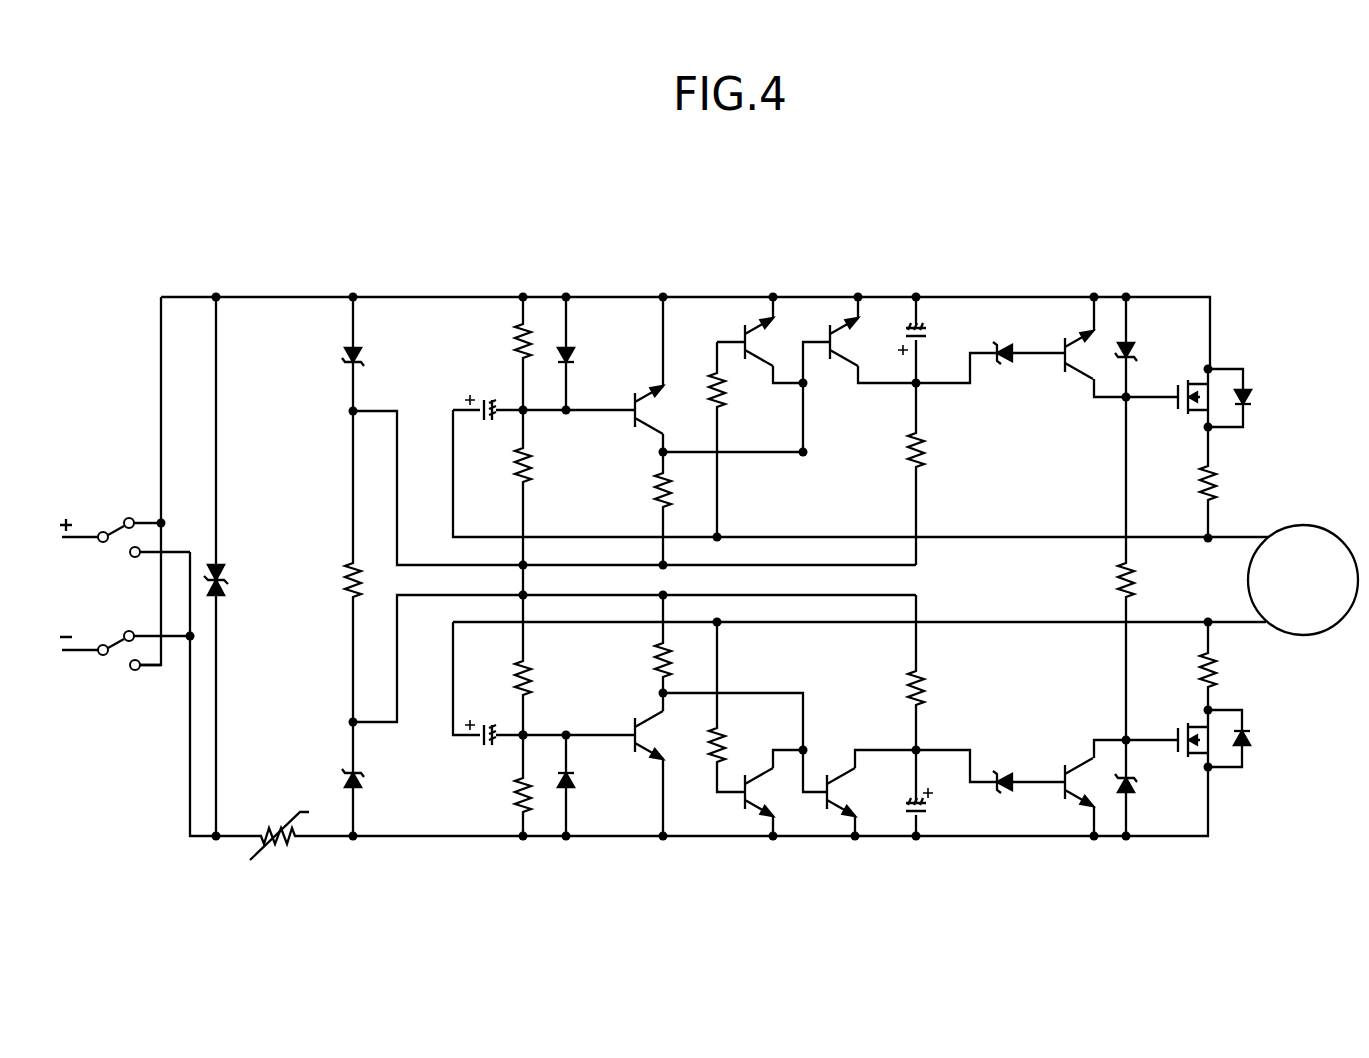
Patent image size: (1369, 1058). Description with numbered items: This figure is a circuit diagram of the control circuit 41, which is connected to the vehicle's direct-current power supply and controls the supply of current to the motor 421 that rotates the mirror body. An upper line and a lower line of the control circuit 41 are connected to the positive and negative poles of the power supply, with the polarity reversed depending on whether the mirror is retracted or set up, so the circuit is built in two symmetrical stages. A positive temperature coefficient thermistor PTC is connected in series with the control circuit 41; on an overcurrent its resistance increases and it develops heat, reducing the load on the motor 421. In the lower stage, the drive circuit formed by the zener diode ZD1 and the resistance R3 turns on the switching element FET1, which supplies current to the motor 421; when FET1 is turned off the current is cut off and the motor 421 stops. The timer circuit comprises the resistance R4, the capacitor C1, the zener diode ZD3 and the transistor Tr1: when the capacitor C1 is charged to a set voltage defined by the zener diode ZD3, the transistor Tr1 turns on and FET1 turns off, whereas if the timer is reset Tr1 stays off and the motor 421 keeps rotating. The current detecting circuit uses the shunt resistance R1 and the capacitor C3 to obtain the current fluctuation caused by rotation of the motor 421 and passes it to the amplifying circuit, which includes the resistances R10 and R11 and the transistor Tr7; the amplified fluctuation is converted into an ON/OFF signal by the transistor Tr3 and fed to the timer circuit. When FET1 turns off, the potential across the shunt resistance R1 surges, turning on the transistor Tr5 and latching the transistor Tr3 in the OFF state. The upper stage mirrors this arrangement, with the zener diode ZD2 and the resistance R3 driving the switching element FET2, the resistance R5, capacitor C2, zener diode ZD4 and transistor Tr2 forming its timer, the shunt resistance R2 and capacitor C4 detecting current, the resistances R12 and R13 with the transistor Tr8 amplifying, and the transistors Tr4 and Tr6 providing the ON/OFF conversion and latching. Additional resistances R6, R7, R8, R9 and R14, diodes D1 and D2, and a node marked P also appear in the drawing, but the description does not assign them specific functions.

The control circuit 41 is at (453, 246).
The motor 421 is at (1330, 531).
The shunt resistance R1 is at (1227, 670).
The shunt resistance R2 is at (1229, 483).
The resistance R3 is at (1145, 580).
The resistance R4 is at (934, 688).
The resistance R5 is at (934, 450).
The resistor R6 is at (699, 745).
The resistor R7 is at (699, 390).
The resistor R8 is at (645, 660).
The resistor R9 is at (645, 490).
The resistance R10 is at (497, 795).
The resistance R11 is at (497, 678).
The resistance R12 is at (497, 341).
The resistance R13 is at (497, 465).
The resistor R14 is at (324, 580).
The transistor Tr1 is at (1082, 757).
The transistor Tr2 is at (1083, 378).
The transistor Tr3 is at (840, 771).
The transistor Tr4 is at (840, 368).
The transistor Tr5 is at (757, 770).
The transistor Tr6 is at (758, 365).
The transistor Tr7 is at (642, 749).
The transistor Tr8 is at (643, 383).
The zener diode ZD1 is at (1150, 787).
The zener diode ZD2 is at (1152, 354).
The zener diode ZD3 is at (684, 767).
The zener diode ZD4 is at (684, 371).
The diode D1 is at (584, 782).
The diode D2 is at (584, 355).
The capacitor C1 is at (935, 810).
The capacitor C2 is at (936, 329).
The capacitor C3 is at (487, 721).
The capacitor C4 is at (487, 396).
The switching element FET1 is at (1226, 761).
The switching element FET2 is at (1227, 420).
The positive temperature coefficient thermistor PTC is at (279, 852).
The node P is at (527, 731).